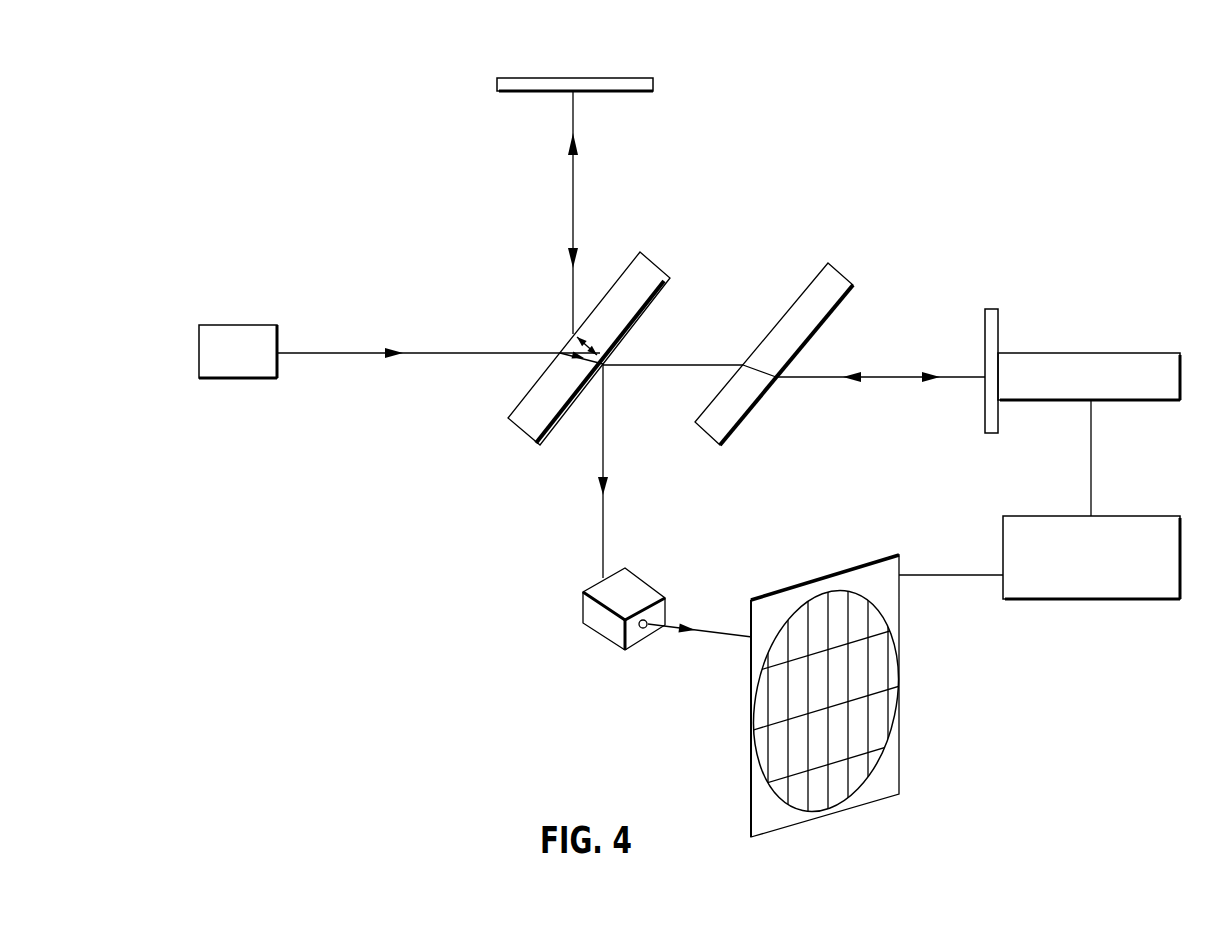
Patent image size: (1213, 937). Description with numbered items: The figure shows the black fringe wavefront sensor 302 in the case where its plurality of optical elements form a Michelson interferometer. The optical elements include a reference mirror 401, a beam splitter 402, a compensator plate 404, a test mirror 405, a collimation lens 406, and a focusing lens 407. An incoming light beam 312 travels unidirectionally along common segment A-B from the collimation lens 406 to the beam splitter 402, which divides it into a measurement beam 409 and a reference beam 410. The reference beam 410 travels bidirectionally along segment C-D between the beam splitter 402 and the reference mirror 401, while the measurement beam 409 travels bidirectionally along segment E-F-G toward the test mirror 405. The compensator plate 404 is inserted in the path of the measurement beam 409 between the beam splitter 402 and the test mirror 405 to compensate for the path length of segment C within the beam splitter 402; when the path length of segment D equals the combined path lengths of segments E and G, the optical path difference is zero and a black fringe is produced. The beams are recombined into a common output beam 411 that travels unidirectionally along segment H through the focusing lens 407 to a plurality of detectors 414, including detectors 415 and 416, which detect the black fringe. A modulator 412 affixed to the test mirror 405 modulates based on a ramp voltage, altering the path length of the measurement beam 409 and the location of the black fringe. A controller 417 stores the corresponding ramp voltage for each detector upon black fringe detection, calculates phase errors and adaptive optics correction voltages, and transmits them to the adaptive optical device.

The black fringe wavefront sensor 302 is at (1100, 100).
The incoming light beam 312 is at (333, 353).
The reference mirror 401 is at (623, 78).
The beam splitter 402 is at (652, 264).
The compensator plate 404 is at (840, 265).
The test mirror 405 is at (999, 320).
The collimation lens 406 is at (250, 325).
The focusing lens 407 is at (638, 585).
The measurement beam 409 is at (895, 375).
The reference beam 410 is at (575, 184).
The common output beam 411 is at (604, 527).
The modulator 412 is at (1135, 353).
The plurality of detectors 414 is at (912, 742).
The detector 415 is at (890, 668).
The detector 416 is at (765, 709).
The controller 417 is at (1135, 516).